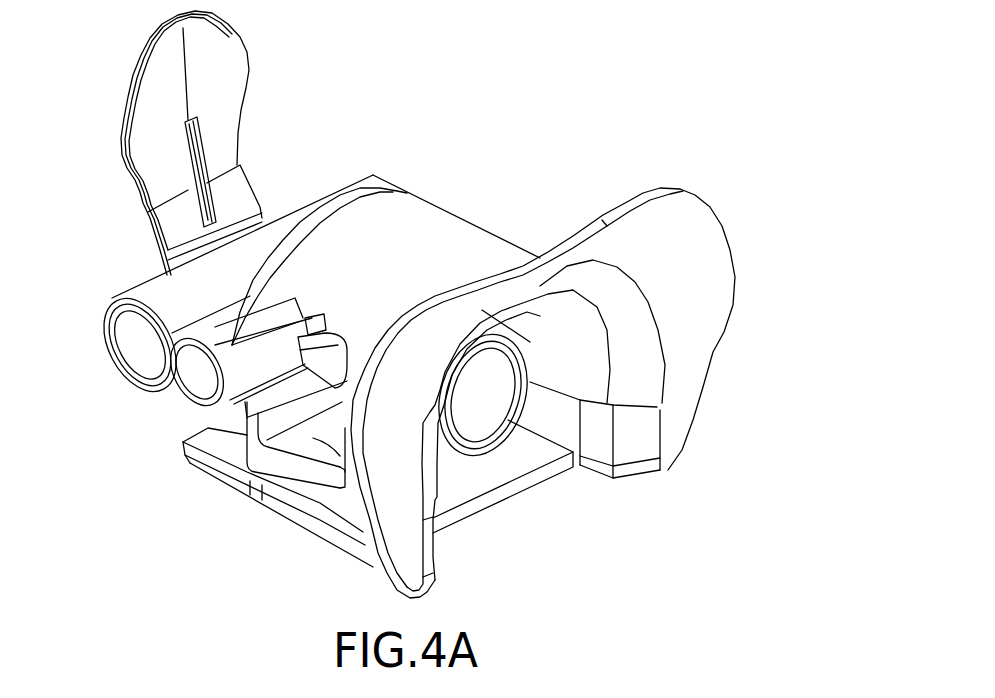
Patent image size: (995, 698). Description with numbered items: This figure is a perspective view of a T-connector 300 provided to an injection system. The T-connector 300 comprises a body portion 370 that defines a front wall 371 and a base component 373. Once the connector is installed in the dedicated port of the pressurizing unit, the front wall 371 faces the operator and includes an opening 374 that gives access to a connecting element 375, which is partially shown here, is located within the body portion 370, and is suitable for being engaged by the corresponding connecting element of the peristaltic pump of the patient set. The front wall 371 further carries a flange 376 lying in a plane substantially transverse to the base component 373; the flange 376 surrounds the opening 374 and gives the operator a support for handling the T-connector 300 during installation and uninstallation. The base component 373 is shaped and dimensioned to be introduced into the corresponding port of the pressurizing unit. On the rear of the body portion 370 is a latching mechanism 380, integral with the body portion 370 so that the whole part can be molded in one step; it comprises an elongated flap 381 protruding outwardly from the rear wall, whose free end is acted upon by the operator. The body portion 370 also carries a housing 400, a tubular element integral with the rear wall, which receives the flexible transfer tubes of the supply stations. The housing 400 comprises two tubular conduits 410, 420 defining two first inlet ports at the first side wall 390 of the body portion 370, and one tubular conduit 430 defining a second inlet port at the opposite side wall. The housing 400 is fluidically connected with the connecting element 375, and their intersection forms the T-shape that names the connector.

The T-connector 300 is at (605, 95).
The body portion 370 is at (572, 370).
The front wall 371 is at (475, 502).
The base component 373 is at (277, 510).
The opening 374 is at (565, 490).
The connecting element 375 is at (487, 400).
The flange 376 is at (705, 315).
The latching mechanism 380 is at (222, 142).
The elongated flap 381 is at (145, 102).
The first side wall 390 is at (368, 302).
The housing 400 is at (203, 353).
The tubular conduit 410 is at (140, 352).
The tubular conduit 420 is at (197, 377).
The tubular conduit 430 is at (373, 178).